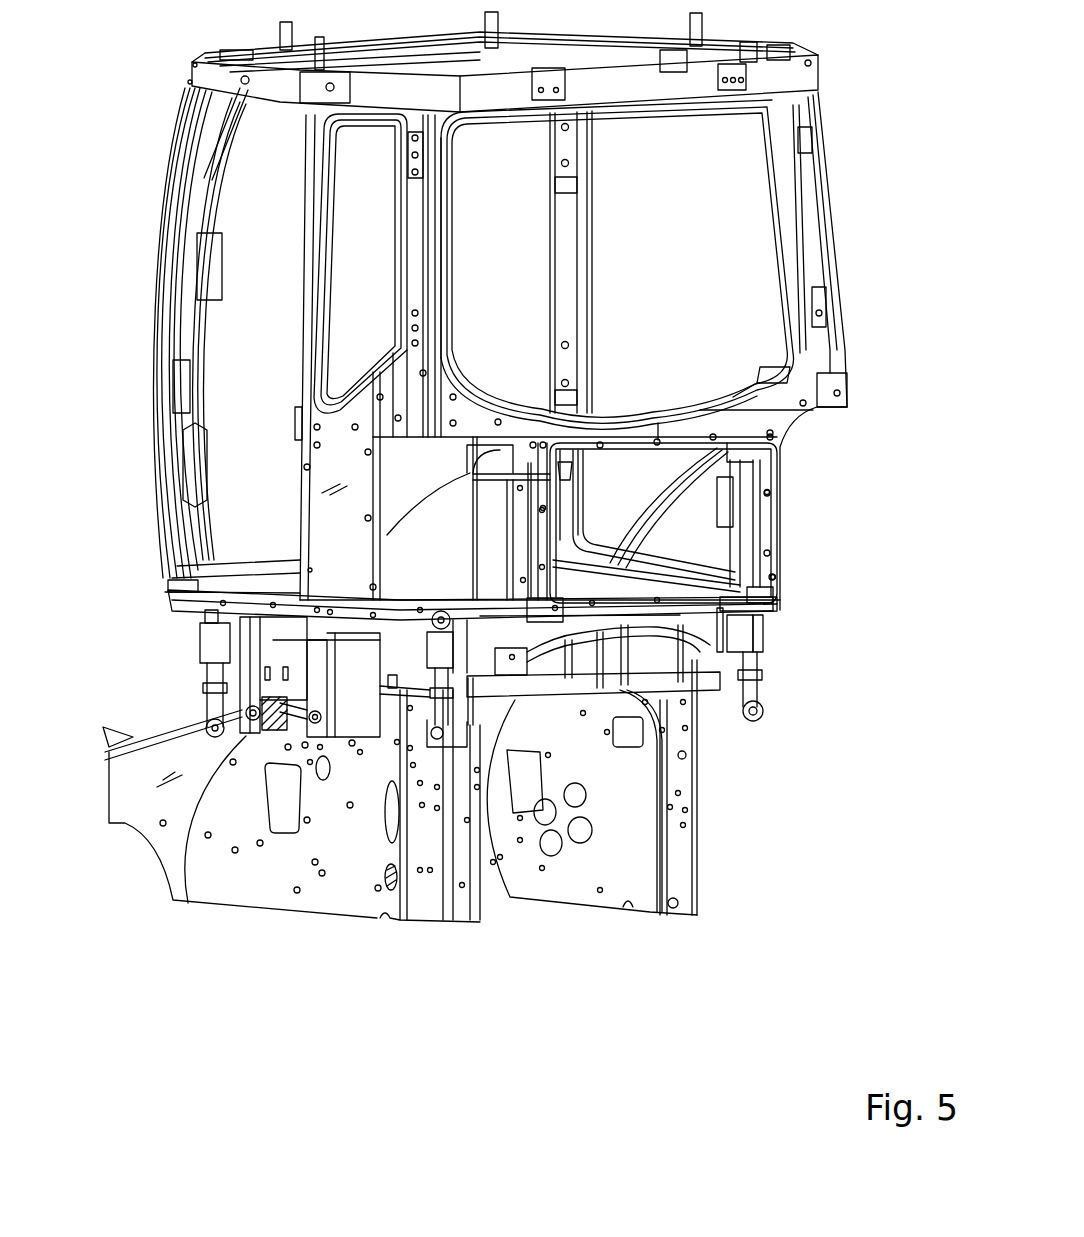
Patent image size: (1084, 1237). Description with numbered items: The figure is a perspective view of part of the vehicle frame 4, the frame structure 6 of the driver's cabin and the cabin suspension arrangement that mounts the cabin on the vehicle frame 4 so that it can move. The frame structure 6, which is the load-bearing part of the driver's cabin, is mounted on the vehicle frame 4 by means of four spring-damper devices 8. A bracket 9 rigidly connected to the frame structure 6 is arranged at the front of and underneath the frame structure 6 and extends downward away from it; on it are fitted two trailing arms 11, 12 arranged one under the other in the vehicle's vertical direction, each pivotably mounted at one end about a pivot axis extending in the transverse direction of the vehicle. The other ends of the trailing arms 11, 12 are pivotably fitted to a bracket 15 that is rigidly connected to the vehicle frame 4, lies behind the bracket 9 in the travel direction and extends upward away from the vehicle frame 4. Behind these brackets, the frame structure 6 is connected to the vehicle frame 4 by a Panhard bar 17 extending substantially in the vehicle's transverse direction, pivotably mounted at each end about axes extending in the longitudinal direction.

The vehicle frame 4 is at (672, 873).
The frame structure 6 is at (828, 412).
The spring-damper device 8 is at (212, 648).
The bracket 9 is at (240, 732).
The trailing arm 11 is at (213, 592).
The trailing arm 12 is at (283, 727).
The bracket 15 is at (317, 733).
The Panhard bar 17 is at (707, 630).